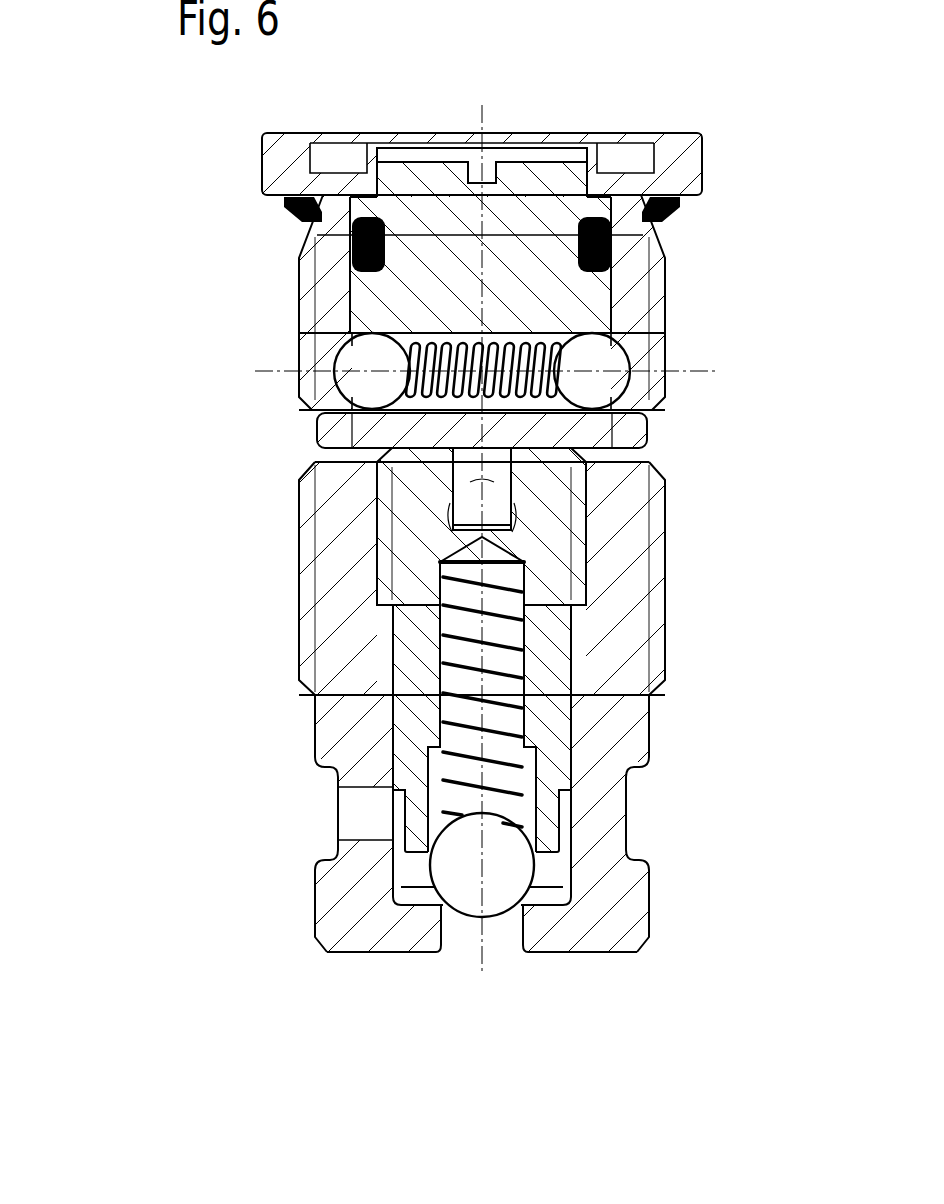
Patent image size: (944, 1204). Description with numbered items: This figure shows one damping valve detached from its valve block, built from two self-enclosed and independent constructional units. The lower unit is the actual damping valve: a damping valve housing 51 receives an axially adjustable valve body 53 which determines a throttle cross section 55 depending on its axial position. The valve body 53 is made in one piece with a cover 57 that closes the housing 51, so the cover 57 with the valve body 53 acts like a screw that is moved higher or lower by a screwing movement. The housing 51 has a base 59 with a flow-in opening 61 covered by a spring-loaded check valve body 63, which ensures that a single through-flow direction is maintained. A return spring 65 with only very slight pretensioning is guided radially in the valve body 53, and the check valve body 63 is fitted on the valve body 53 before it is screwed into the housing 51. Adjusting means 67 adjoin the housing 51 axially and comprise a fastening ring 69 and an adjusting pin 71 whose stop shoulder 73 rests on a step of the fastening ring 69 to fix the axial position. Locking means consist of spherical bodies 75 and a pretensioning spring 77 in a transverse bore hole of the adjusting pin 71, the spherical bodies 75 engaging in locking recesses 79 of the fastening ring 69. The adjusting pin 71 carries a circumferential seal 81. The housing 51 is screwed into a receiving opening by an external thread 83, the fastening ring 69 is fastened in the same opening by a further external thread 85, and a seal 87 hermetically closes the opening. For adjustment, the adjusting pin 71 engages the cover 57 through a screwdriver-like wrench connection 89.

The damping valve housing 51 is at (333, 743).
The valve body 53 is at (410, 660).
The throttle cross section 55 is at (385, 813).
The cover 57 is at (553, 515).
The base 59 is at (410, 953).
The flow-in opening 61 is at (503, 930).
The check valve body 63 is at (518, 875).
The return spring 65 is at (537, 775).
The adjusting means 67 is at (205, 459).
The fastening ring 69 is at (350, 302).
The adjusting pin 71 is at (505, 330).
The stop shoulder 73 is at (372, 212).
The spherical bodies 75 is at (352, 387).
The pretensioning spring 77 is at (603, 305).
The locking recesses 79 is at (638, 397).
The circumferential seal 81 is at (612, 258).
The external thread 83 is at (308, 637).
The external thread 85 is at (300, 308).
The seal 87 is at (292, 215).
The wrench connection 89 is at (447, 505).